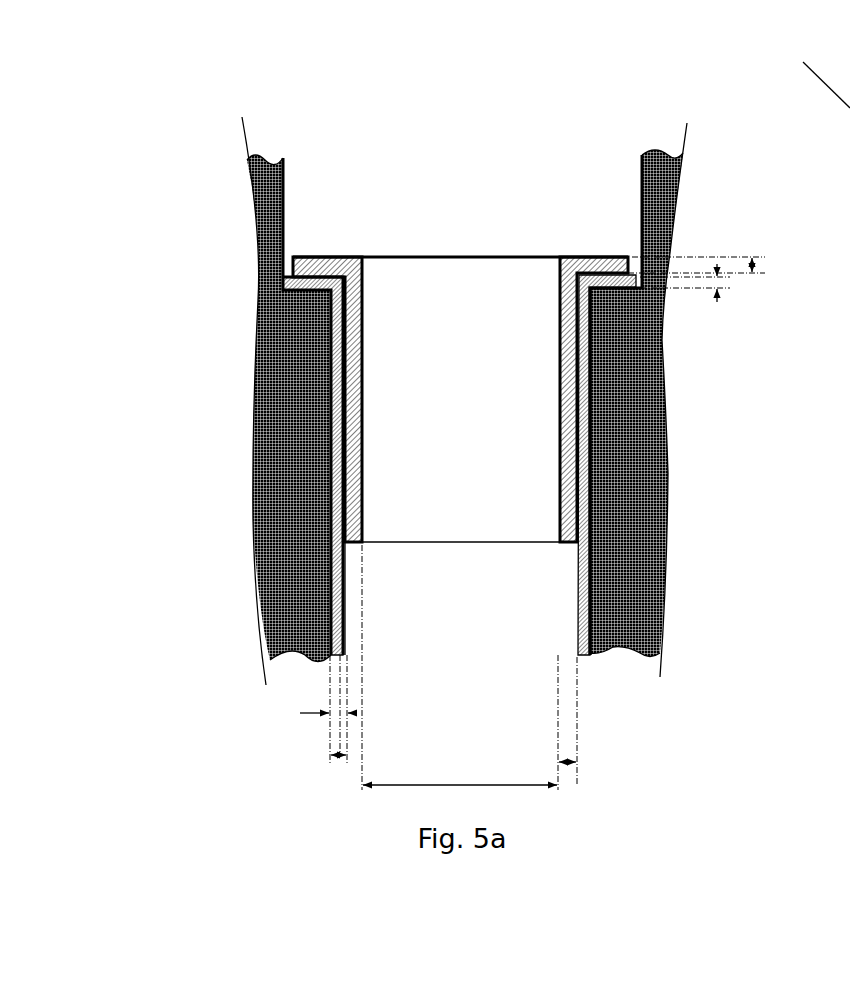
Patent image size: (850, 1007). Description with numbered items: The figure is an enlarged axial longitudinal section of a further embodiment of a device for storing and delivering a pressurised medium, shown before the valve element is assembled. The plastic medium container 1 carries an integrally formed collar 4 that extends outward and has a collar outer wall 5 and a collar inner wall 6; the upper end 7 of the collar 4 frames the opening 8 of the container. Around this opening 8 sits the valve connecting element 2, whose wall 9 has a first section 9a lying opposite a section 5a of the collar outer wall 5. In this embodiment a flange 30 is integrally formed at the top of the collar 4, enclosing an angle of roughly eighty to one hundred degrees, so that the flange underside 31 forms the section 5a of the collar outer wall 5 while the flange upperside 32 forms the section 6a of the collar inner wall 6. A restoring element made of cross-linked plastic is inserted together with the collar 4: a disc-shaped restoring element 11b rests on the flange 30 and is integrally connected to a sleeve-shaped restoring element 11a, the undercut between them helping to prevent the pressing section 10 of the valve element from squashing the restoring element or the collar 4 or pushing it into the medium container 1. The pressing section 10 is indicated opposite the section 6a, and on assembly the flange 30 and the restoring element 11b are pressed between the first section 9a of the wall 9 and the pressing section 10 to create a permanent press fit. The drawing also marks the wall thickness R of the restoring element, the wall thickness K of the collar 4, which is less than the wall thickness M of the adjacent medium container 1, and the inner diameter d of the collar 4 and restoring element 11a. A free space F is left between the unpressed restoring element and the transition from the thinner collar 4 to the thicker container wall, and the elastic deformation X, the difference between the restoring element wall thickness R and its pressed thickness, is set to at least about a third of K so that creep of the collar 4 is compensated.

The medium container 1 is at (583, 657).
The valve connecting element 2 is at (633, 613).
The collar 4 is at (624, 412).
The collar outer wall 5 is at (599, 497).
The section of the collar outer wall 5a is at (327, 403).
The collar inner wall 6 is at (575, 520).
The section of the collar inner wall 6a is at (348, 421).
The end of the collar 7 is at (688, 340).
The opening 8 is at (462, 255).
The wall of the valve connecting element 9 is at (294, 207).
The section of the wall 9a is at (310, 287).
The pressing section 10 is at (804, 69).
The sleeve-shaped restoring element 11a is at (581, 373).
The disc-shaped restoring element 11b is at (613, 258).
The flange 30 is at (288, 288).
The flange underside 31 is at (298, 294).
The flange upperside 32 is at (320, 283).
The wall thickness of the restoring element R is at (757, 266).
The wall thickness of the collar K is at (720, 298).
The wall thickness of the medium container M is at (333, 752).
The inner diameter d is at (459, 667).
The free space F is at (350, 562).
The elastic deformation X is at (790, 770).